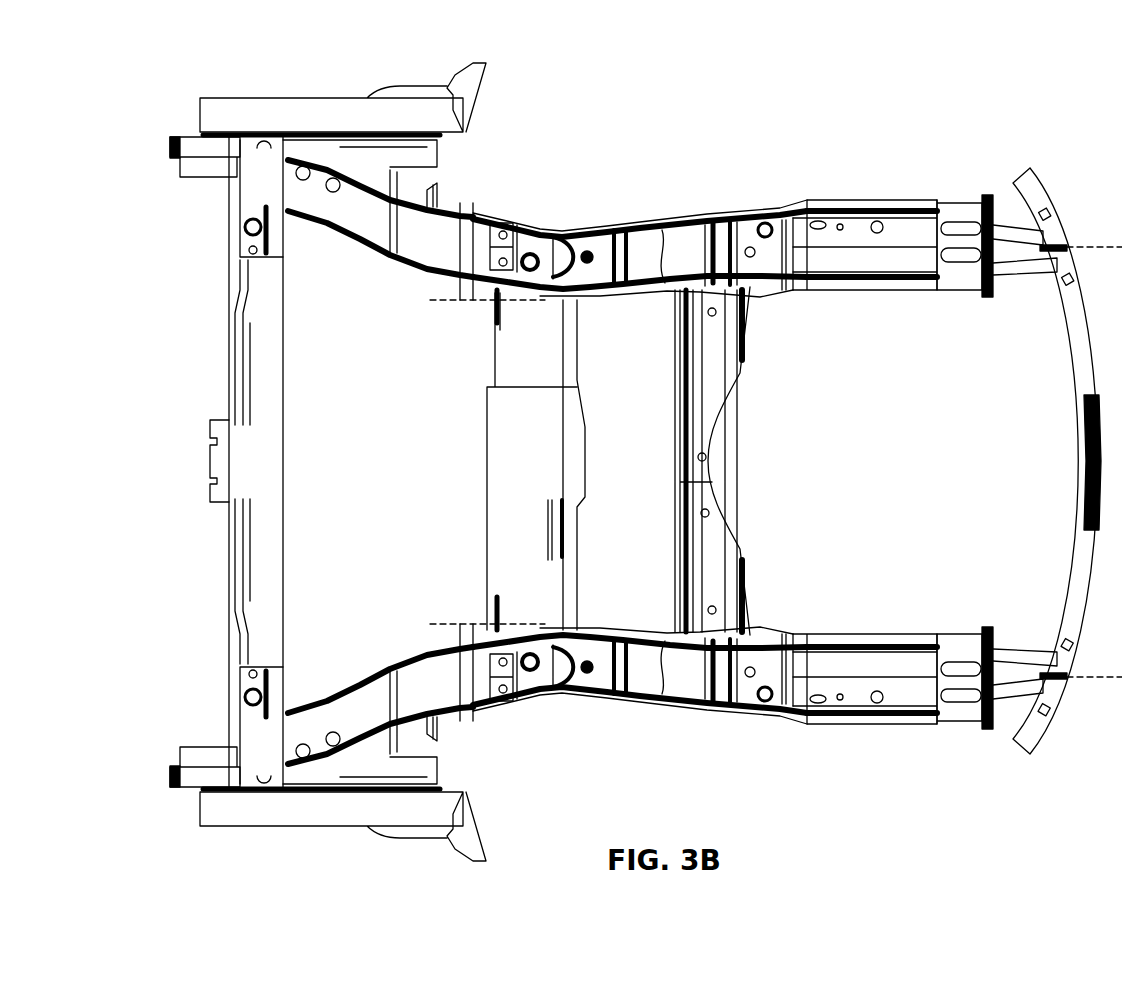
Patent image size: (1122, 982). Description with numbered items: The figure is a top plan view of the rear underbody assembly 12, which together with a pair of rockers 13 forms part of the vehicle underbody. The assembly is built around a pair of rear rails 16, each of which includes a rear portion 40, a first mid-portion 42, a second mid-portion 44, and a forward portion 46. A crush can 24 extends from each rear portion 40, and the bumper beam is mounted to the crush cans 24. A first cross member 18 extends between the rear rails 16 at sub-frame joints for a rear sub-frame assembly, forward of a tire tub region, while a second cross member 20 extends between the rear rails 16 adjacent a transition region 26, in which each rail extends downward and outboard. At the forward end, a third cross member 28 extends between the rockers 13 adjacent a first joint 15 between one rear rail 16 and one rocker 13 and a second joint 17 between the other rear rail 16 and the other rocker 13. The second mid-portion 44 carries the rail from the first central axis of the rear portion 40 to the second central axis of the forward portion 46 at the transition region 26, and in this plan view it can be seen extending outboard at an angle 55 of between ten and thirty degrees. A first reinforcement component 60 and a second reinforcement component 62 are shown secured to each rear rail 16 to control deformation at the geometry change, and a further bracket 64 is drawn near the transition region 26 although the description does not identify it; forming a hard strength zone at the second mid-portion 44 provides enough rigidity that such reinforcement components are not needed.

The rear underbody assembly 12 is at (962, 70).
The rockers 13 is at (275, 98).
The first joint 15 is at (222, 193).
The rear rails 16 is at (928, 192).
The second joint 17 is at (222, 743).
The first cross member 18 is at (718, 417).
The second cross member 20 is at (575, 408).
The crush cans 24 is at (1027, 277).
The transition region 26 is at (553, 222).
The third cross member 28 is at (285, 432).
The rear portion 40 is at (850, 200).
The first mid-portion 42 is at (773, 293).
The second mid-portion 44 is at (640, 215).
The forward portion 46 is at (342, 243).
The angle 55 is at (428, 297).
The first reinforcement component 60 is at (617, 237).
The second reinforcement component 62 is at (590, 240).
The mounting bracket 64 is at (533, 247).